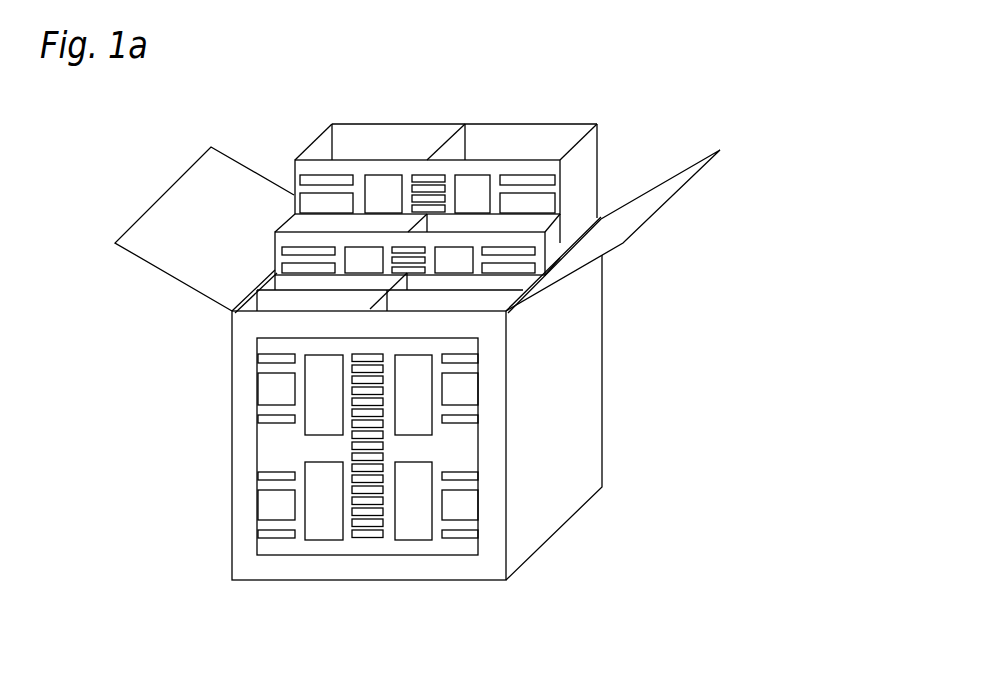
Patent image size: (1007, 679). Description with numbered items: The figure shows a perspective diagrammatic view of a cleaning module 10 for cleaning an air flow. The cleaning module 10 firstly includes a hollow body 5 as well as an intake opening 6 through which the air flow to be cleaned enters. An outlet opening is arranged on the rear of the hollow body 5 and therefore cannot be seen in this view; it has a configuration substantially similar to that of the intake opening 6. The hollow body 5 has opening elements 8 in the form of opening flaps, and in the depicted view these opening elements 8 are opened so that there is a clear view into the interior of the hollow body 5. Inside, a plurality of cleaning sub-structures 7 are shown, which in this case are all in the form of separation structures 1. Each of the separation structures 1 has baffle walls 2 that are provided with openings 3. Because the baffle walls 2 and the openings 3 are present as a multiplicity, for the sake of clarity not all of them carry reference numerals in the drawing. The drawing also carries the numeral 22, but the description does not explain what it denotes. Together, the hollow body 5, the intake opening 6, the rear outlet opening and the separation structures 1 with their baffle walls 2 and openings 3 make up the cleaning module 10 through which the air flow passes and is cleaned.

The separation structure 1 is at (598, 115).
The baffle wall 2 is at (347, 542).
The opening 3 is at (480, 508).
The hollow body 5 is at (578, 400).
The intake opening 6 is at (278, 554).
The cleaning sub-structure 7 is at (302, 137).
The opening element 8 is at (166, 245).
The cleaning module 10 is at (707, 222).
The compartment 22 is at (525, 168).